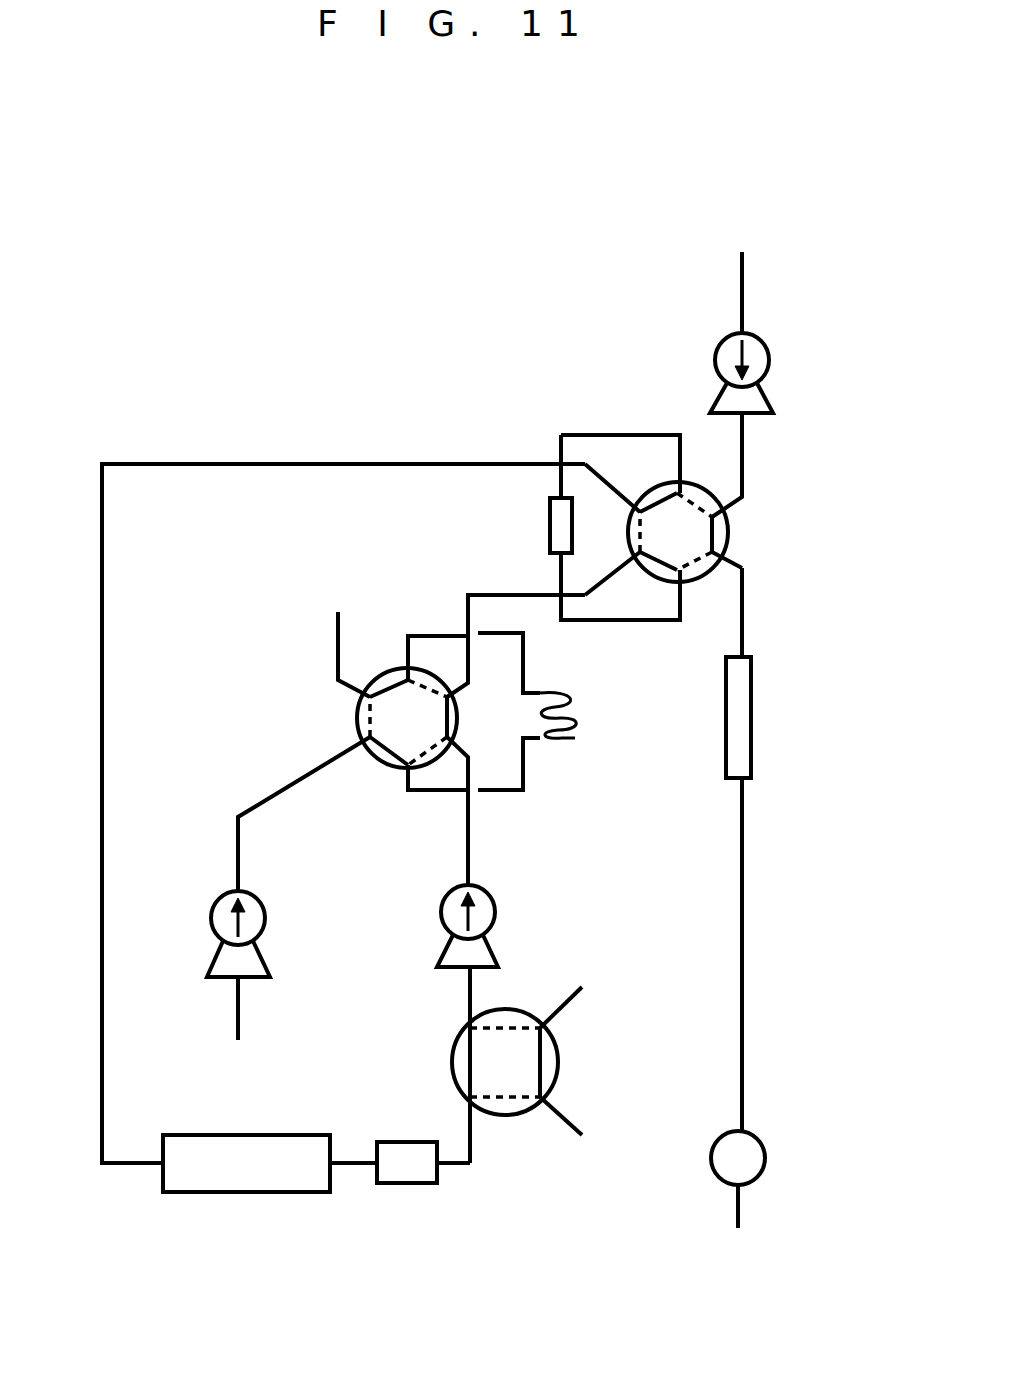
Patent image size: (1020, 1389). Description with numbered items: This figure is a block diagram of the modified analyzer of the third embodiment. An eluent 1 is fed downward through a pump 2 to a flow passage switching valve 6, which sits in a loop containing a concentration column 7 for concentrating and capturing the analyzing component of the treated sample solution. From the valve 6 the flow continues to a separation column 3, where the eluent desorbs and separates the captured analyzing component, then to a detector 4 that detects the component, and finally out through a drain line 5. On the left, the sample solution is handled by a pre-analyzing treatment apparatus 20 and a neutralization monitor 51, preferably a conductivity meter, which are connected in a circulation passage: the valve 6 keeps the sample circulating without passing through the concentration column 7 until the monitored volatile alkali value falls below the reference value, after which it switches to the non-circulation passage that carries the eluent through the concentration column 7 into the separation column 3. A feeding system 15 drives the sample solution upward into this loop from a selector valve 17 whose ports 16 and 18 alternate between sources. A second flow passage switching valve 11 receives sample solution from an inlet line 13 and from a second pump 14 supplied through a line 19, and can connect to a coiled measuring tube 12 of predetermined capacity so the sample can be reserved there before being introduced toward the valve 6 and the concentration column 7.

The eluent 1 is at (730, 262).
The pump 2 is at (717, 355).
The separation column 3 is at (740, 702).
The detector 4 is at (764, 1149).
The drain line 5 is at (738, 1236).
The flow passage switching valve 6 is at (730, 528).
The concentration column 7 is at (548, 518).
The switching valve 11 is at (358, 730).
The sample loop 12 is at (572, 742).
The sample inlet 13 is at (345, 629).
The pump 14 is at (265, 905).
The feeding system 15 is at (495, 895).
The valve port 16 is at (581, 991).
The selector valve 17 is at (558, 1062).
The valve port 18 is at (581, 1135).
The reagent supply line 19 is at (235, 1035).
The pre-analyzing treatment apparatus 20 is at (213, 1192).
The neutralization monitor 51 is at (400, 1183).